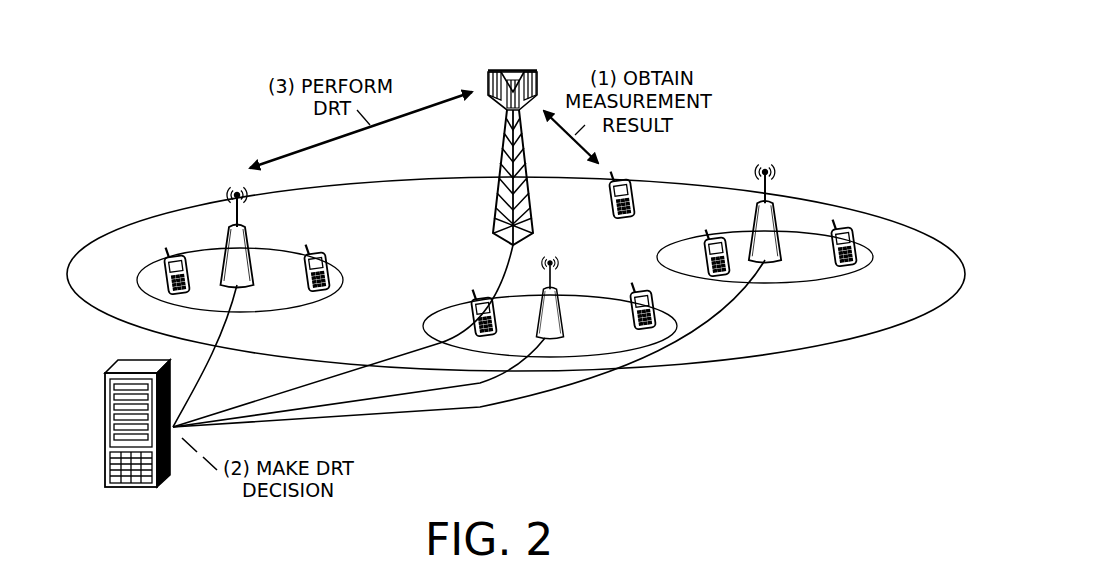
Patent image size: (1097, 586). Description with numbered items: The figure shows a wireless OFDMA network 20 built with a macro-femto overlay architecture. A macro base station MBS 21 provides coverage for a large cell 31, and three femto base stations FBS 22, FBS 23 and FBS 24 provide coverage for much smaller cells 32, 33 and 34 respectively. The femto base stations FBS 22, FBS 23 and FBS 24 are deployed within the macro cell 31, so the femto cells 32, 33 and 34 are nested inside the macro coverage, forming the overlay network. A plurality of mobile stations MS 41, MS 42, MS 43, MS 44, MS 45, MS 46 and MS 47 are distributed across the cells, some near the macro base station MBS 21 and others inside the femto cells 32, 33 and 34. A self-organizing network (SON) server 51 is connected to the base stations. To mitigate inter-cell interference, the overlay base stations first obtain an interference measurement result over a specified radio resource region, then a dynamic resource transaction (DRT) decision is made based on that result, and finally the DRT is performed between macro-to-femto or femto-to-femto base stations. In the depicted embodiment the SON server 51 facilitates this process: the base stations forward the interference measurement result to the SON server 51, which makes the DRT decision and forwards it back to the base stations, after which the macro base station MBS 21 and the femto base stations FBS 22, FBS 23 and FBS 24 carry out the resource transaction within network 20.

The wireless OFDMA network 20 is at (912, 58).
The macro base station MBS 21 is at (512, 68).
The femto base station FBS 22 is at (265, 237).
The femto base station FBS 23 is at (576, 298).
The femto base station FBS 24 is at (790, 213).
The cell 31 is at (416, 228).
The cell 32 is at (285, 306).
The cell 33 is at (604, 346).
The cell 34 is at (807, 276).
The mobile station MS 41 is at (618, 219).
The mobile station MS 42 is at (172, 294).
The mobile station MS 43 is at (312, 291).
The mobile station MS 44 is at (478, 336).
The mobile station MS 45 is at (638, 329).
The mobile station MS 46 is at (712, 276).
The mobile station MS 47 is at (838, 266).
The self-organizing network (SON) server 51 is at (105, 405).